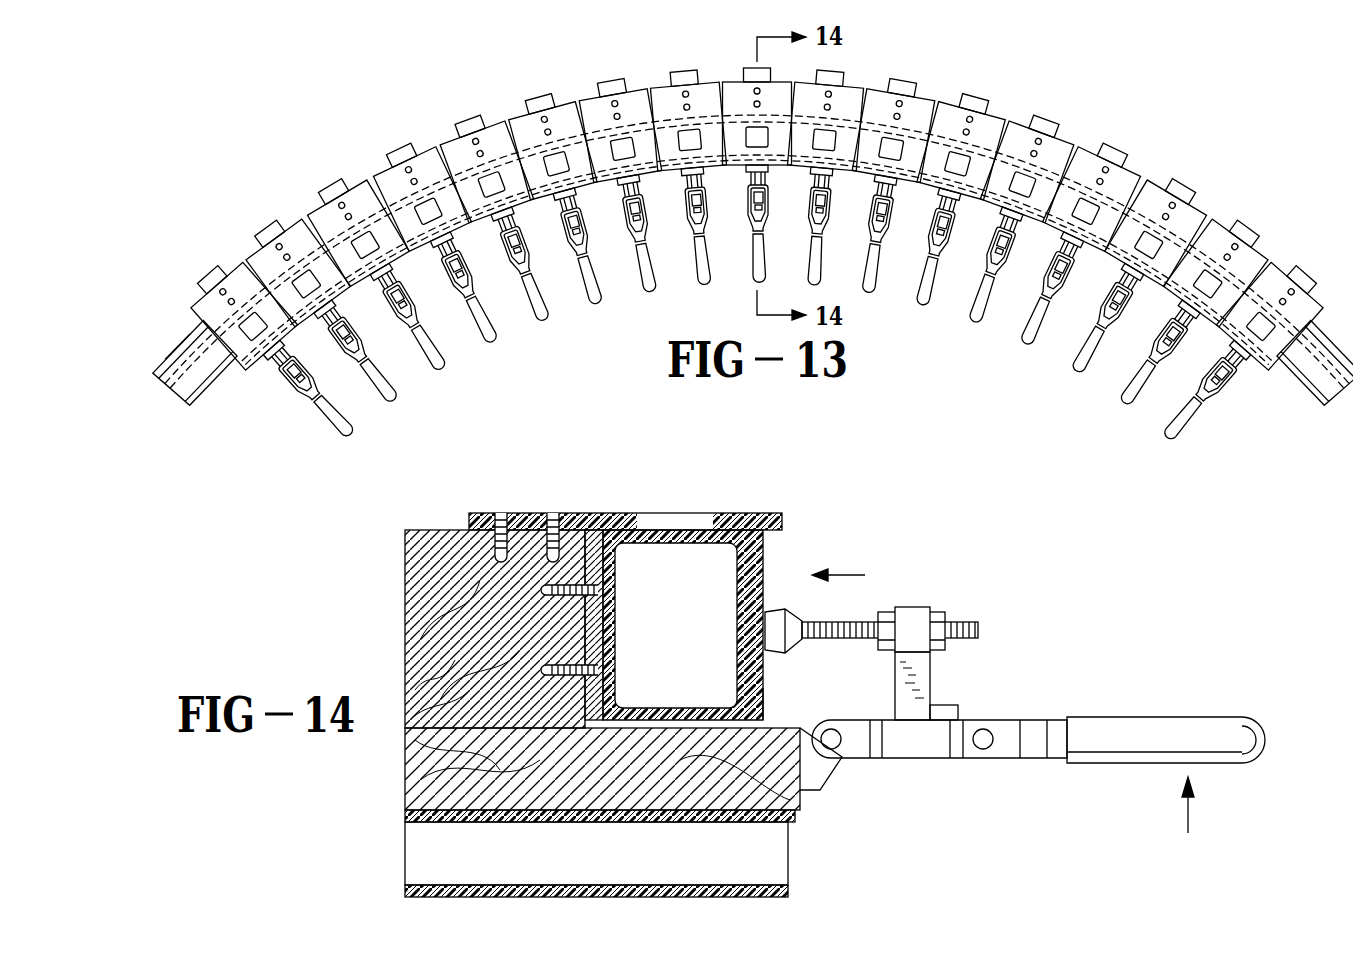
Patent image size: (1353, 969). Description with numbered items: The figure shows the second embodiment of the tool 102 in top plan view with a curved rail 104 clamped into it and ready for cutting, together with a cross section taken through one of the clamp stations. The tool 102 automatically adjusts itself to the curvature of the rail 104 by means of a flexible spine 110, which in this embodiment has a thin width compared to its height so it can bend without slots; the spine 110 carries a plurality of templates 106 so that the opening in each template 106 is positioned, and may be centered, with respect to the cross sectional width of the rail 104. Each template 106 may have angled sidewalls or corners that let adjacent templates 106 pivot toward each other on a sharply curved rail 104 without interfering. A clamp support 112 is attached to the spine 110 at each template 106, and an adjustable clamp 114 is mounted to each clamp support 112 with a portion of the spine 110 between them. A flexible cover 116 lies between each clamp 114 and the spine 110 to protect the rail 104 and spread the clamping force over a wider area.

In FIG. 13, the tool 102 is at (1183, 153).
In FIG. 14, the tool 102 is at (740, 503).
In FIG. 13, the rail 104 is at (188, 379).
In FIG. 14, the rail 104 is at (680, 530).
In FIG. 13, the template 106 is at (537, 109).
In FIG. 14, the template 106 is at (592, 513).
In FIG. 13, the flexible spine 110 is at (180, 343).
In FIG. 14, the flexible spine 110 is at (588, 637).
In FIG. 13, the clamp support 112 is at (466, 121).
In FIG. 14, the clamp support 112 is at (410, 598).
In FIG. 13, the clamp 114 is at (590, 301).
In FIG. 14, the clamp 114 is at (1093, 717).
In FIG. 13, the flexible cover 116 is at (220, 382).
In FIG. 14, the flexible cover 116 is at (765, 700).